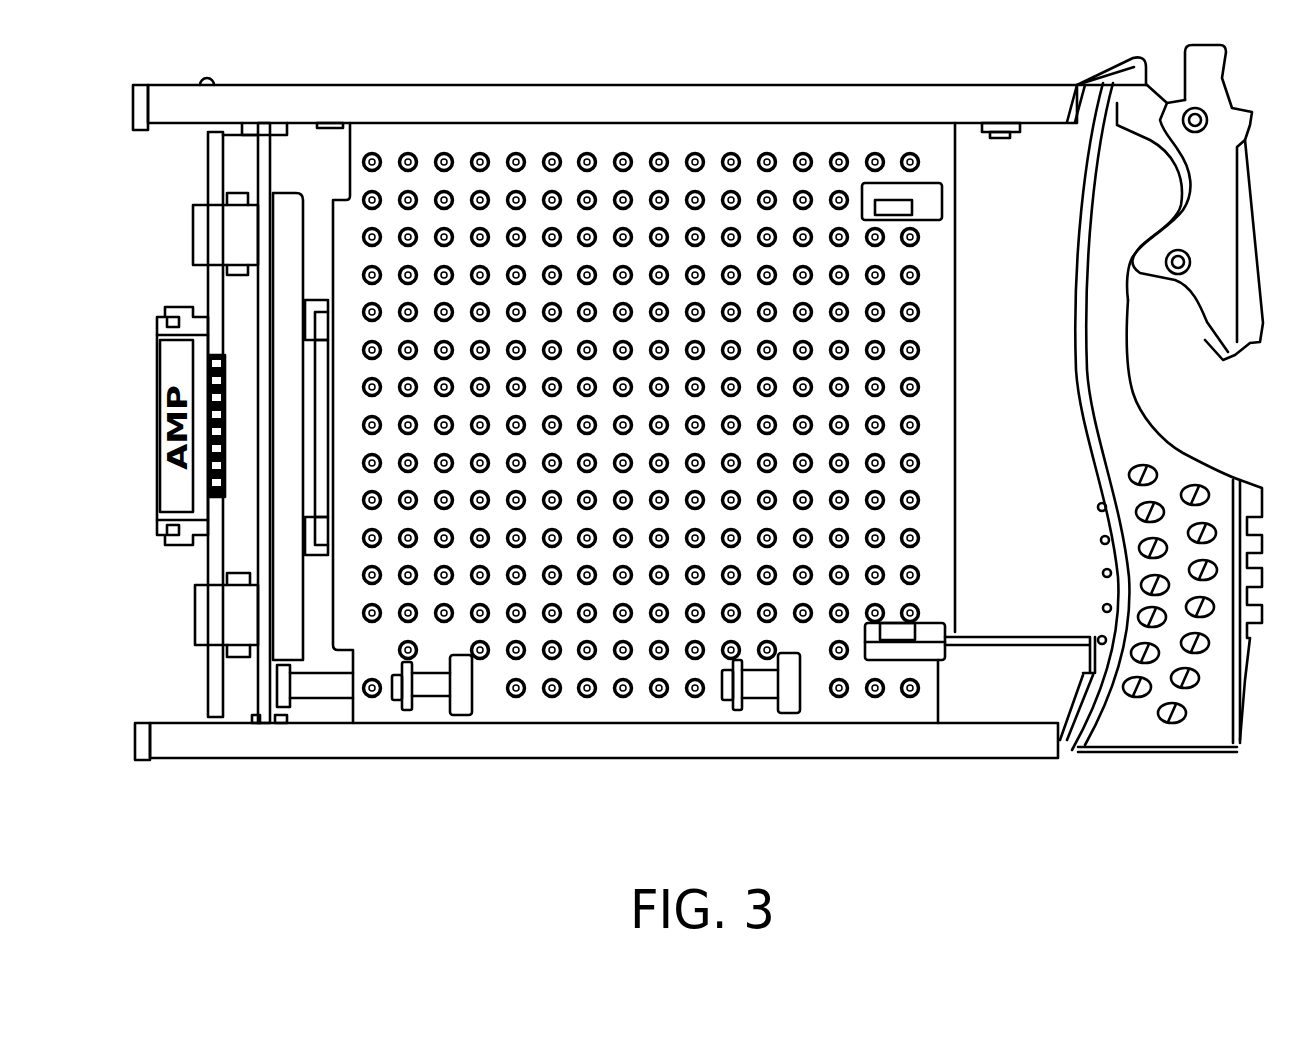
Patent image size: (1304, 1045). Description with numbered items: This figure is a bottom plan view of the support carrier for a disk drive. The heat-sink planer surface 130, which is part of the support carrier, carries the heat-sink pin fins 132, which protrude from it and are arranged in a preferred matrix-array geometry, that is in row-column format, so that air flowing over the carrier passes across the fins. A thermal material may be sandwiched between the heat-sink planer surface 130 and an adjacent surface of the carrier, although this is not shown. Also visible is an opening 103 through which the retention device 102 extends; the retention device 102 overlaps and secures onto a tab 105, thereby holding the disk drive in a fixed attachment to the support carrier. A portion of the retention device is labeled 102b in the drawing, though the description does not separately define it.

The retention device 102 is at (943, 218).
The clip arm 102b is at (900, 637).
The opening 103 is at (935, 652).
The tab 105 is at (877, 647).
The heat-sink planer surface 130 is at (612, 708).
The heat-sink pin fins 132 is at (697, 705).